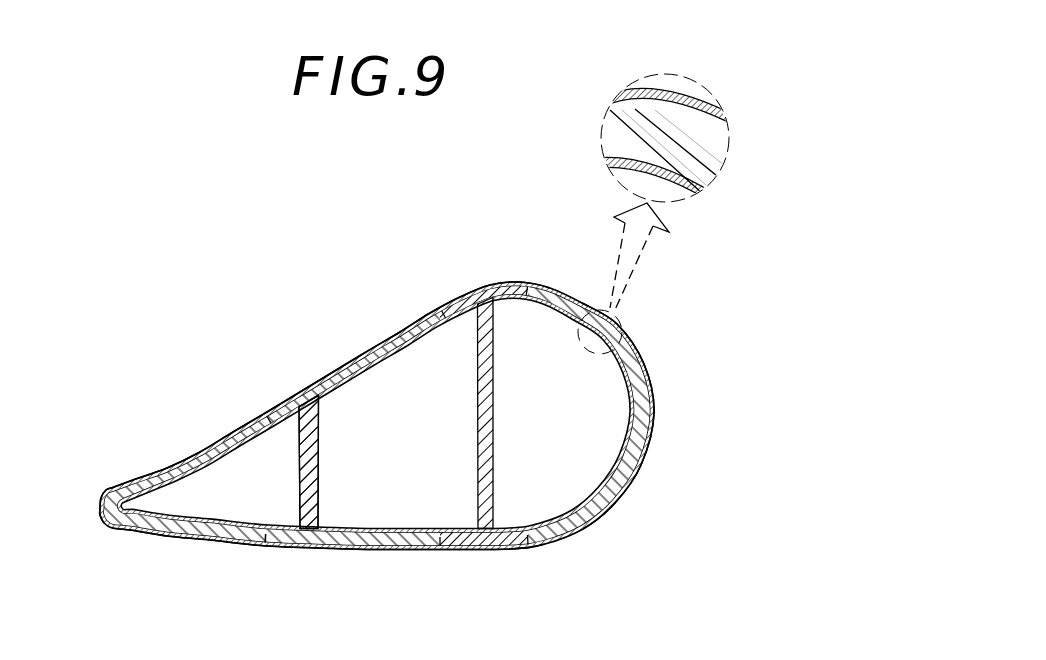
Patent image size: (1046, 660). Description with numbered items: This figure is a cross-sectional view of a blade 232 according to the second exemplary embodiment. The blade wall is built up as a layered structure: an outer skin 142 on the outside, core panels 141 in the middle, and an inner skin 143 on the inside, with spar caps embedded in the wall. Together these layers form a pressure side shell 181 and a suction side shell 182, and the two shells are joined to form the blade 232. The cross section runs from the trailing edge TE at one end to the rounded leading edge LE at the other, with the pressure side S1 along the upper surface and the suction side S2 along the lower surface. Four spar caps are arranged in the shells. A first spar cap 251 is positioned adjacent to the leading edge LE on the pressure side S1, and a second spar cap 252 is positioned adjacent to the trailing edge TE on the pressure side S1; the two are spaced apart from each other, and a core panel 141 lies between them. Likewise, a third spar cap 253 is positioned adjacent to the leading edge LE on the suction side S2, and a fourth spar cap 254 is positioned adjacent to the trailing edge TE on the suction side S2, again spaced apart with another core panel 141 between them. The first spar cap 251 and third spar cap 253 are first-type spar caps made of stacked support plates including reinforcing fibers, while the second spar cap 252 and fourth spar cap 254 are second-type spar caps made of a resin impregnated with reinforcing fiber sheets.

The core panel 141 is at (718, 160).
The outer skin 142 is at (703, 106).
The inner skin 143 is at (680, 196).
The pressure side shell 181 is at (377, 306).
The suction side shell 182 is at (577, 551).
The blade 232 is at (466, 262).
The first spar cap 251 is at (497, 288).
The second spar cap 252 is at (309, 390).
The third spar cap 253 is at (480, 548).
The fourth spar cap 254 is at (312, 540).
The pressure side S1 is at (218, 446).
The suction side S2 is at (230, 546).
The trailing edge TE is at (99, 503).
The leading edge LE is at (654, 404).